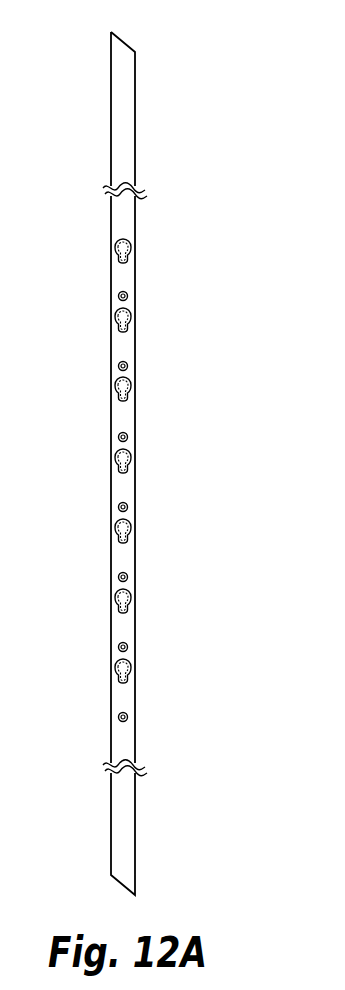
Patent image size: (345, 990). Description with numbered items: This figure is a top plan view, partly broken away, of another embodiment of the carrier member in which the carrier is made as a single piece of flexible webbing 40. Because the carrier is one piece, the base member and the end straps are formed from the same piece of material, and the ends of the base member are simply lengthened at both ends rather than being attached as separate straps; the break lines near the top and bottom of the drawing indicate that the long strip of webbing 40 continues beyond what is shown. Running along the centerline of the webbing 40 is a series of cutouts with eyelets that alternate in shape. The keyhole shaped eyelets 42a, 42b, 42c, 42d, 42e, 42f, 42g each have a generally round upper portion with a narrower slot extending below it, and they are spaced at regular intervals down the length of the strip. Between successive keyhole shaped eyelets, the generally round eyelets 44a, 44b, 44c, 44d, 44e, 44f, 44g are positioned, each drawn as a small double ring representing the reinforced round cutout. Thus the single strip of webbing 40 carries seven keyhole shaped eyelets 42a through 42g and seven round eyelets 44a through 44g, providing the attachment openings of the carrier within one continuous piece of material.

The webbing 40 is at (120, 101).
The keyhole shaped eyelet 42a is at (115, 248).
The keyhole shaped eyelet 42b is at (115, 311).
The keyhole shaped eyelet 42c is at (113, 388).
The keyhole shaped eyelet 42d is at (133, 453).
The keyhole shaped eyelet 42e is at (135, 530).
The keyhole shaped eyelet 42f is at (113, 600).
The keyhole shaped eyelet 42g is at (113, 670).
The round eyelet 44a is at (118, 296).
The round eyelet 44b is at (117, 366).
The round eyelet 44c is at (118, 437).
The round eyelet 44d is at (135, 508).
The round eyelet 44e is at (135, 578).
The round eyelet 44f is at (118, 648).
The round eyelet 44g is at (118, 718).